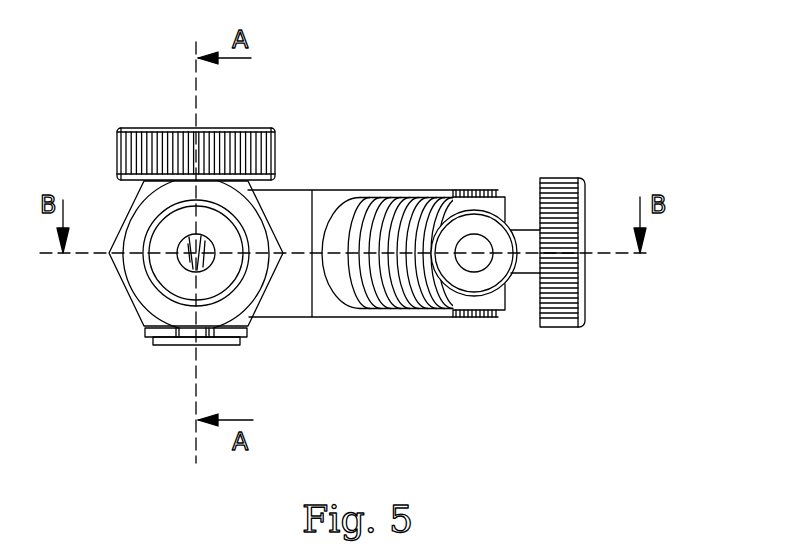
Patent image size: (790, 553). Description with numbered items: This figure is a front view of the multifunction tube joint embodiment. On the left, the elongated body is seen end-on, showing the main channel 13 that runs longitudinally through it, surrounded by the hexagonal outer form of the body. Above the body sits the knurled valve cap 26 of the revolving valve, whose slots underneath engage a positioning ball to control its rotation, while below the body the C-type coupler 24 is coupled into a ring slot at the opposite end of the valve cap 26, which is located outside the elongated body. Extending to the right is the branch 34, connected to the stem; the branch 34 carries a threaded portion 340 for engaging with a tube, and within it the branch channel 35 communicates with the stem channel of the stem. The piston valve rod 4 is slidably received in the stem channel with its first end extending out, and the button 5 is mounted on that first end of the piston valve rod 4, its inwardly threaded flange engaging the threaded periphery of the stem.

The piston valve rod 4 is at (530, 240).
The button 5 is at (563, 185).
The main channel 13 is at (180, 250).
The C-type coupler 24 is at (247, 333).
The valve cap 26 is at (155, 136).
The branch 34 is at (402, 198).
The branch channel 35 is at (483, 259).
The threaded portion 340 is at (425, 213).